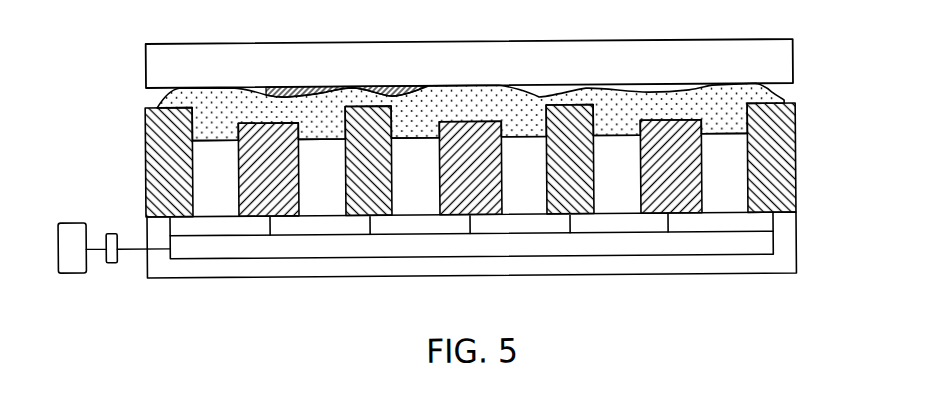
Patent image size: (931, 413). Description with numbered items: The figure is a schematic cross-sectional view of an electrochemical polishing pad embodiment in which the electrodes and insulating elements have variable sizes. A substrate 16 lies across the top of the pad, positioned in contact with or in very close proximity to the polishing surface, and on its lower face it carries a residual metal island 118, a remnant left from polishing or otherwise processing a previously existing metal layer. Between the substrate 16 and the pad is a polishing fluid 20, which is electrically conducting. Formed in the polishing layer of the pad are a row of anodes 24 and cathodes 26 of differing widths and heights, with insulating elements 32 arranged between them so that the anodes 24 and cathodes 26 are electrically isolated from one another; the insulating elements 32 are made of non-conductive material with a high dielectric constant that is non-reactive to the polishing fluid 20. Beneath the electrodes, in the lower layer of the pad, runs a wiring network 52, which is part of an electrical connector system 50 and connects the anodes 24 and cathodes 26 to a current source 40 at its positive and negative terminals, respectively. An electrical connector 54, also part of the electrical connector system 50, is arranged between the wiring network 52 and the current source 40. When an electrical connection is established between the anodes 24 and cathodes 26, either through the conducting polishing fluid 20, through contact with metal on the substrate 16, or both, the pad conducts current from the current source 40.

The substrate 16 is at (750, 52).
The polishing fluid 20 is at (773, 98).
The residual metal island 118 is at (394, 91).
The anodes 24 is at (147, 163).
The cathodes 26 is at (258, 124).
The insulating elements 32 is at (737, 186).
The current source 40 is at (71, 223).
The electrical connector system 50 is at (214, 304).
The wiring network 52 is at (440, 252).
The electrical connector 54 is at (113, 234).